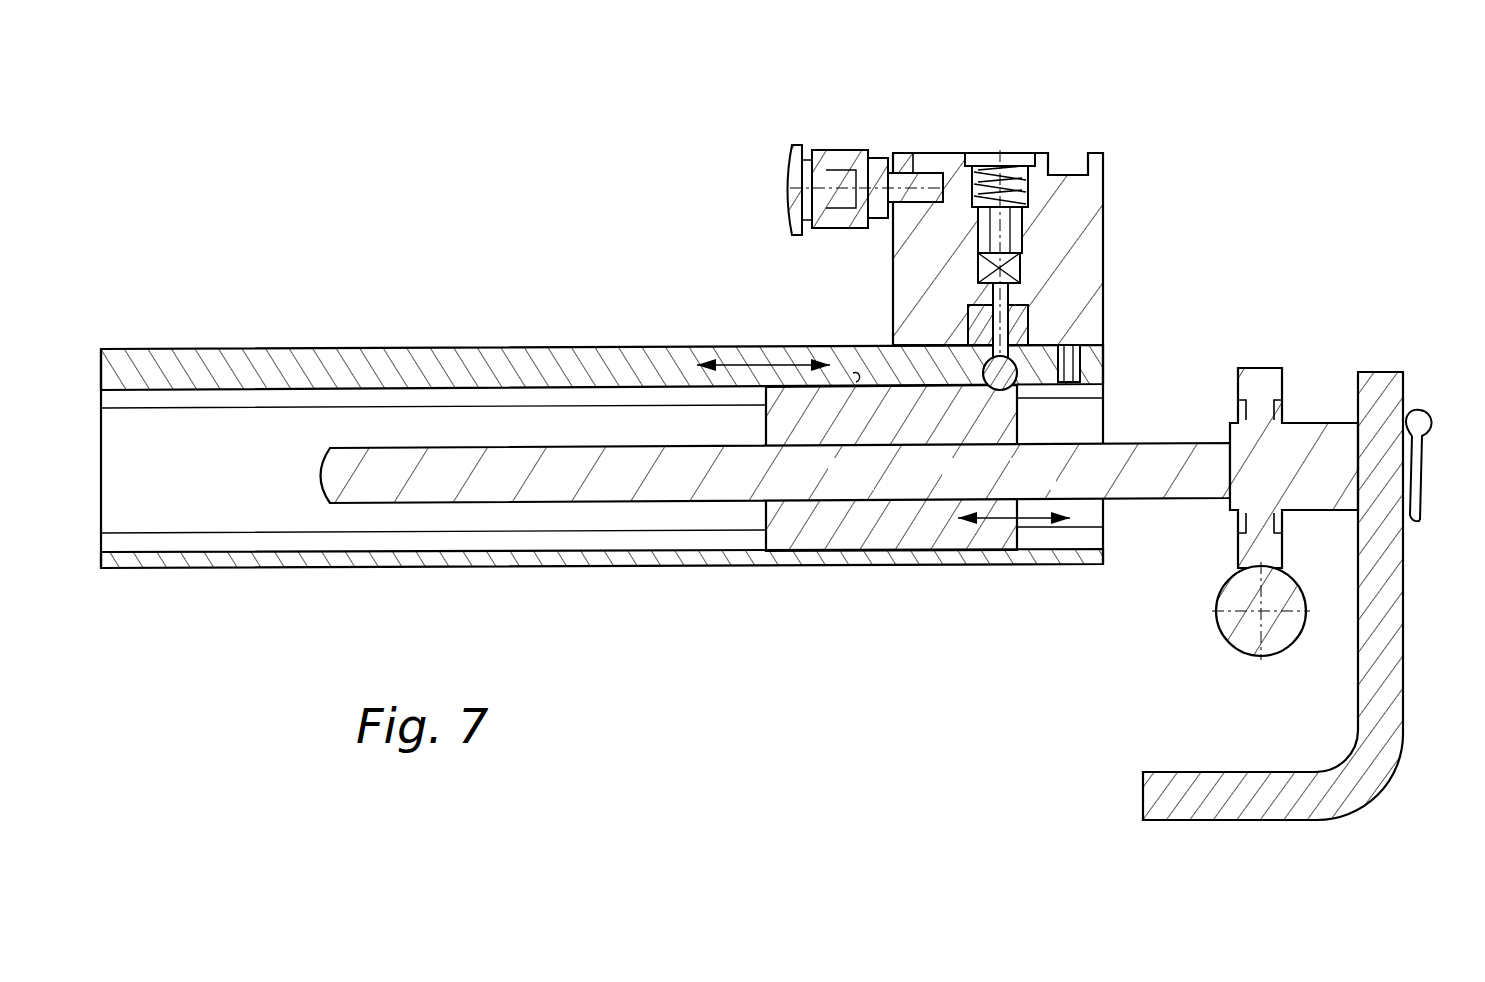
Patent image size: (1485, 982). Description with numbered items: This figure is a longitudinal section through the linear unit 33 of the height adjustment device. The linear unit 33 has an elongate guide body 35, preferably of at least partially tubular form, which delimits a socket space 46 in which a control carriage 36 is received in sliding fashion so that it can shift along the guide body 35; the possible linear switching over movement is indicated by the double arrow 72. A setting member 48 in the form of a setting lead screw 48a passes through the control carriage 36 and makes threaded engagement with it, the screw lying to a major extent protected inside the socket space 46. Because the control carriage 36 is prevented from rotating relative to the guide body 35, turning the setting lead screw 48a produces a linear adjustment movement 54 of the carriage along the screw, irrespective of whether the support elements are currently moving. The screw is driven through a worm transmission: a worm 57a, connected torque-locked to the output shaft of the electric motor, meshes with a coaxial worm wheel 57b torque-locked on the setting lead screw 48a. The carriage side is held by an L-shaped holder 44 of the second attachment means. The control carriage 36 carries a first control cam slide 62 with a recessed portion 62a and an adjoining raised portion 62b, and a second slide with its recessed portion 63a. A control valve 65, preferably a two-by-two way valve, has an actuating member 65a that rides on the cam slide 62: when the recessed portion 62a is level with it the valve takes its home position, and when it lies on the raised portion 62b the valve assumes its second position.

The linear unit 33 is at (602, 406).
The guide body 35 is at (446, 370).
The control carriage 36 is at (832, 532).
The holder 44 is at (1394, 624).
The socket space 46 is at (590, 548).
The setting member 48 is at (785, 412).
The setting lead screw 48a is at (1180, 448).
The adjustment movement 54 is at (1016, 540).
The worm 57a is at (1224, 622).
The worm wheel 57b is at (1262, 375).
The first control cam slide 62 is at (914, 362).
The recessed portion 62a is at (1016, 392).
The raised portion 62b is at (856, 382).
The recessed portion 63a is at (1000, 398).
The control valve 65 is at (1071, 225).
The actuating member 65a is at (1020, 396).
The double arrow 72 is at (768, 365).